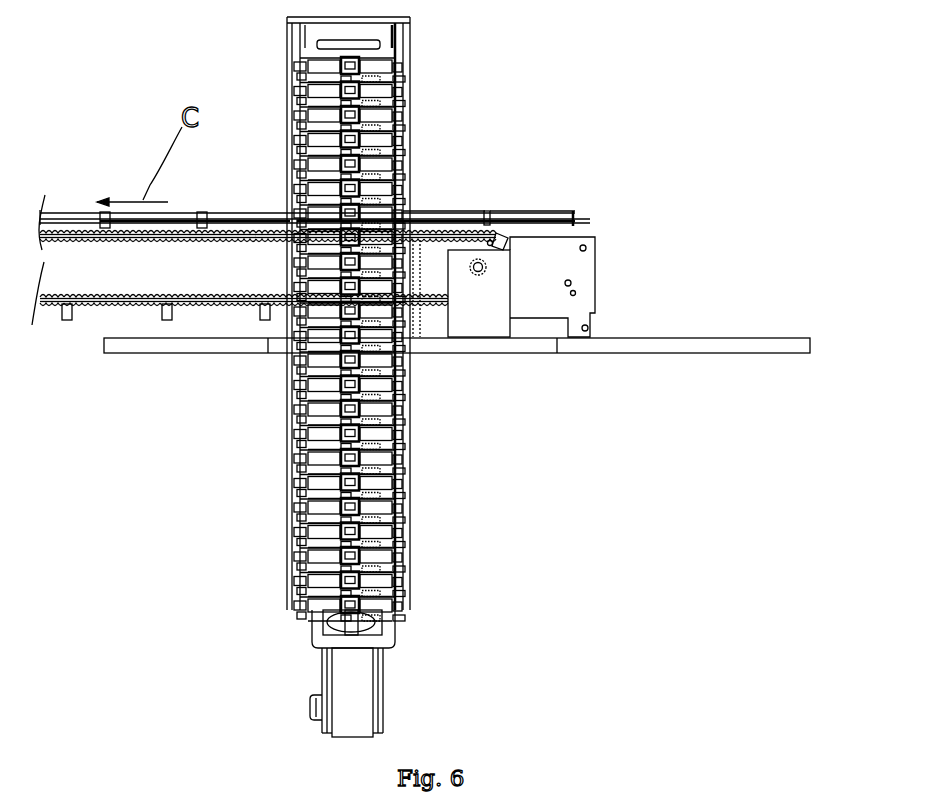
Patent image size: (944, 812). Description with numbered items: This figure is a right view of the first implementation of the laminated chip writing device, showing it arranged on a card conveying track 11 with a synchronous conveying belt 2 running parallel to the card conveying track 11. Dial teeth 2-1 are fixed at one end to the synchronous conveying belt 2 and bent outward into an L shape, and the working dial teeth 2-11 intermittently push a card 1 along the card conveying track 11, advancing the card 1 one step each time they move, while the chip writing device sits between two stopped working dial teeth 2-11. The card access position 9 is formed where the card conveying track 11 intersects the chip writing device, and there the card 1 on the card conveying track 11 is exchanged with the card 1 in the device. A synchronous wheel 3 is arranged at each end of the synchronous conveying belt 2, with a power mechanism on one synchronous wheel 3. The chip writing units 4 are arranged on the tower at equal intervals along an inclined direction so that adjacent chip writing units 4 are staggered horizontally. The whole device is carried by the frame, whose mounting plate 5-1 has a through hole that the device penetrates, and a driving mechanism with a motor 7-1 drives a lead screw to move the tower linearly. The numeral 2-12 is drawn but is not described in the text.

The card 1 is at (575, 213).
The synchronous conveying belt 2 is at (238, 215).
The dial tooth 2-1 is at (520, 214).
The working dial teeth 2-11 is at (406, 213).
The chain hangers 2-12 is at (245, 353).
The synchronous wheel 3 is at (490, 245).
The chip writing unit 4 is at (410, 72).
The mounting plate 5-1 is at (443, 352).
The motor 7-1 is at (358, 685).
The card access position 9 is at (291, 214).
The card conveying track 11 is at (57, 215).